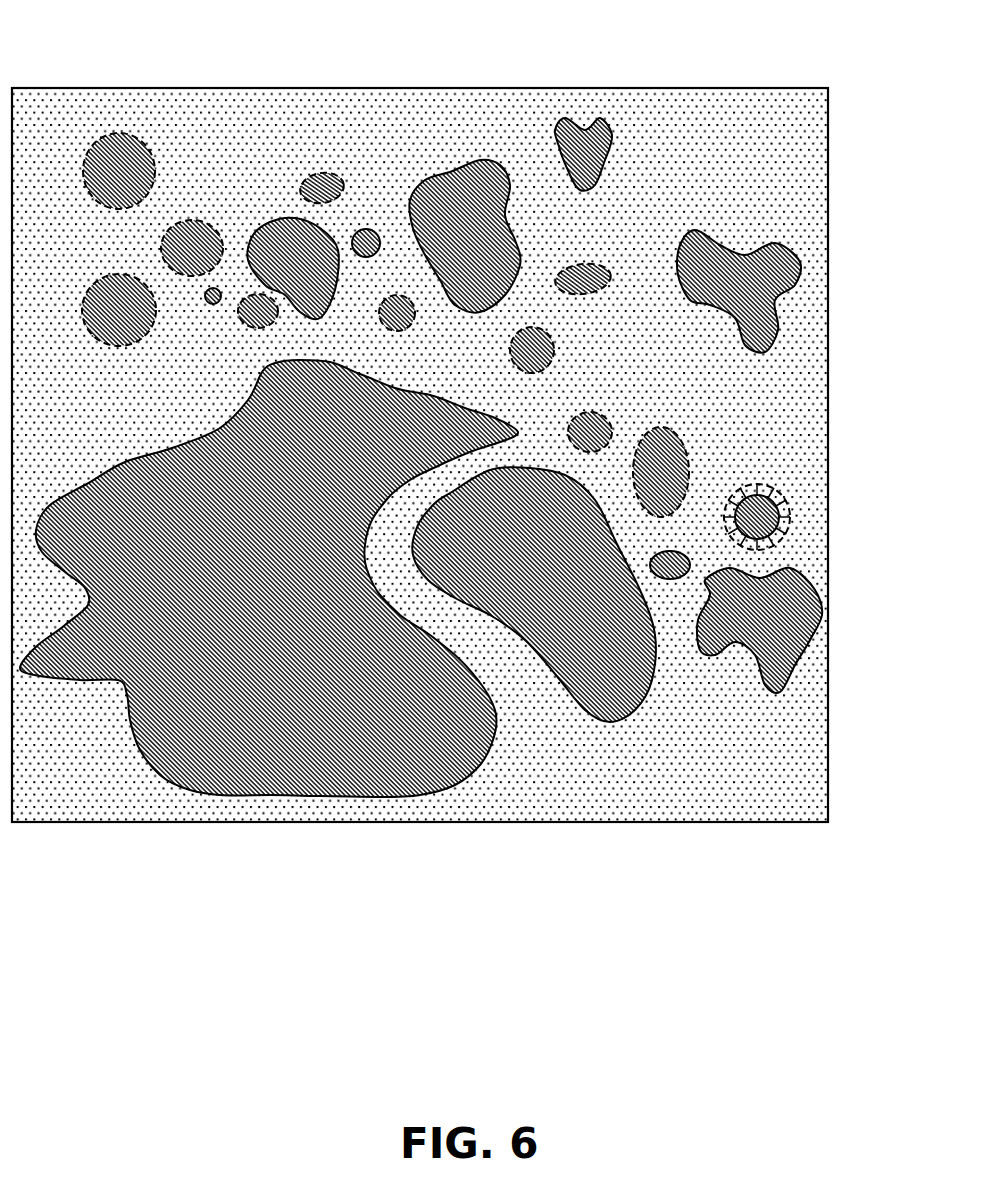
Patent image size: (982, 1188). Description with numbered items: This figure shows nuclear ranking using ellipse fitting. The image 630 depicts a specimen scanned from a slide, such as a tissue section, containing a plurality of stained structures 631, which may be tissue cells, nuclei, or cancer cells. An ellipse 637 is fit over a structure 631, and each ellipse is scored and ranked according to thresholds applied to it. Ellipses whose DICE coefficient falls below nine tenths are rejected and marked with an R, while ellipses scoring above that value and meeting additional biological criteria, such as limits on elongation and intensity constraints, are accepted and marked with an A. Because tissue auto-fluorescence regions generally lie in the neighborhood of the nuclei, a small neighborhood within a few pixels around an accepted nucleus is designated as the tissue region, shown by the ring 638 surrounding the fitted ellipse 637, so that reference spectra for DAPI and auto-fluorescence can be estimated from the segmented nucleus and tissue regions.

The image 630 is at (702, 86).
The stained structure 631 is at (790, 501).
The ellipse 637 is at (779, 491).
The ring 638 is at (789, 556).
The rejected ellipse marker R is at (127, 270).
The accepted ellipse marker A is at (380, 322).